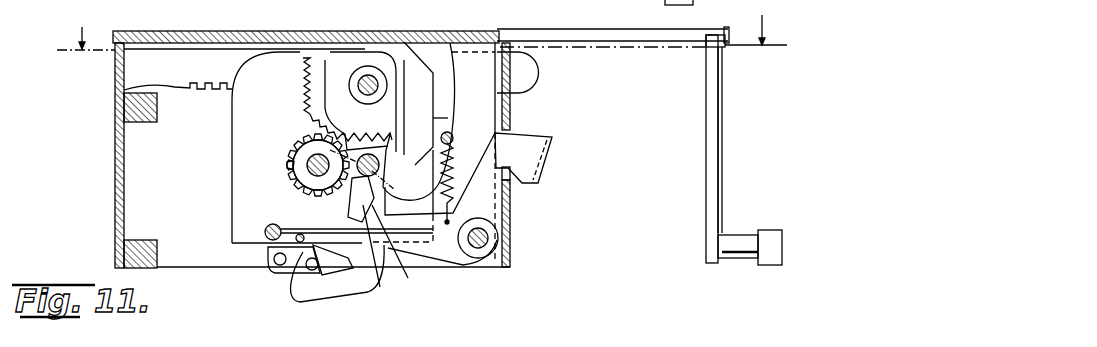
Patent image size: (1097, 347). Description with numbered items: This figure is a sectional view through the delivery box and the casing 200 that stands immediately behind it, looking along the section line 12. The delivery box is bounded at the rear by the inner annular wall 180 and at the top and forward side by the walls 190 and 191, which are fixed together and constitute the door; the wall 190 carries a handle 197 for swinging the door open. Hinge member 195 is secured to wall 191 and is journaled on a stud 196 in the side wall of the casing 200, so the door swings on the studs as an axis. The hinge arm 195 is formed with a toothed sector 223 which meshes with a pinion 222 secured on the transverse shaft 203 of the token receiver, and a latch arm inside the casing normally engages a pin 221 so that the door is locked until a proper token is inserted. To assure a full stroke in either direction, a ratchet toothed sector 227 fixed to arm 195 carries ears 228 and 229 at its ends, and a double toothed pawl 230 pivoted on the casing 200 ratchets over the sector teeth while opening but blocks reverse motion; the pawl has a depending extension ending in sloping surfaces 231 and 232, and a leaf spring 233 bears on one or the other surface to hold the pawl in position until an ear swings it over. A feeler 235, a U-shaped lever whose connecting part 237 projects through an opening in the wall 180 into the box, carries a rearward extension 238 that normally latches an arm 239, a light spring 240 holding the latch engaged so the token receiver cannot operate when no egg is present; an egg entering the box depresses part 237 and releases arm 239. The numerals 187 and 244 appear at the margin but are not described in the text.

The section line 12 is at (422, 28).
The inner annular wall 180 is at (512, 236).
The element 187 is at (785, 328).
The top wall of delivery box 190 is at (715, 145).
The forward side wall of delivery box 191 is at (597, 42).
The hinge member 195 is at (487, 75).
The hinge stud 196 is at (372, 81).
The handle 197 is at (763, 240).
The casing 200 is at (133, 159).
The transverse shaft 203 is at (307, 165).
The pin 221 is at (670, 343).
The pinion 222 is at (297, 153).
The toothed sector 223 is at (318, 116).
The ratchet toothed sector 227 is at (323, 87).
The ear 228 is at (392, 121).
The ear 229 is at (303, 53).
The double toothed pawl 230 is at (362, 190).
The sloping surface 231 is at (385, 280).
The sloping surface 232 is at (402, 260).
The leaf spring 233 is at (292, 212).
The feeler 235 is at (487, 198).
The connecting part of feeler 237 is at (553, 139).
The rearward extension 238 is at (335, 283).
The arm 239 is at (298, 270).
The spring 240 is at (450, 145).
The element 244 is at (515, 344).